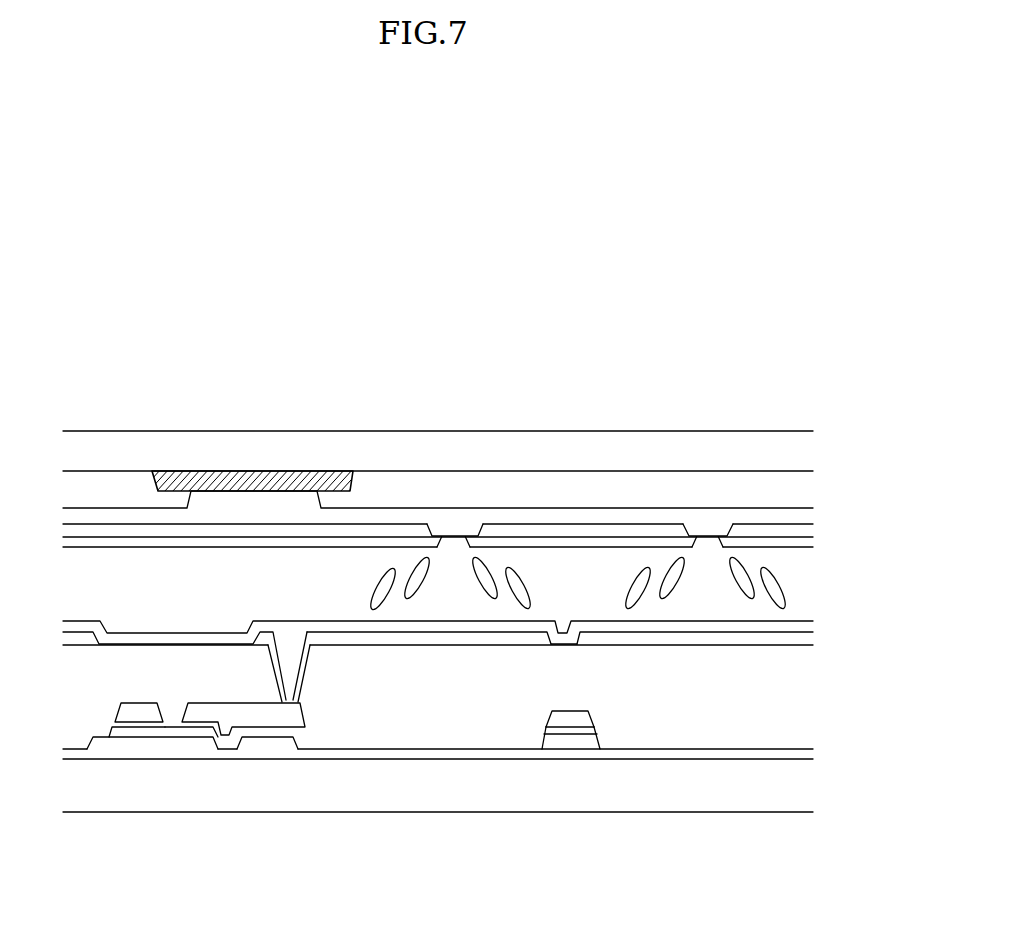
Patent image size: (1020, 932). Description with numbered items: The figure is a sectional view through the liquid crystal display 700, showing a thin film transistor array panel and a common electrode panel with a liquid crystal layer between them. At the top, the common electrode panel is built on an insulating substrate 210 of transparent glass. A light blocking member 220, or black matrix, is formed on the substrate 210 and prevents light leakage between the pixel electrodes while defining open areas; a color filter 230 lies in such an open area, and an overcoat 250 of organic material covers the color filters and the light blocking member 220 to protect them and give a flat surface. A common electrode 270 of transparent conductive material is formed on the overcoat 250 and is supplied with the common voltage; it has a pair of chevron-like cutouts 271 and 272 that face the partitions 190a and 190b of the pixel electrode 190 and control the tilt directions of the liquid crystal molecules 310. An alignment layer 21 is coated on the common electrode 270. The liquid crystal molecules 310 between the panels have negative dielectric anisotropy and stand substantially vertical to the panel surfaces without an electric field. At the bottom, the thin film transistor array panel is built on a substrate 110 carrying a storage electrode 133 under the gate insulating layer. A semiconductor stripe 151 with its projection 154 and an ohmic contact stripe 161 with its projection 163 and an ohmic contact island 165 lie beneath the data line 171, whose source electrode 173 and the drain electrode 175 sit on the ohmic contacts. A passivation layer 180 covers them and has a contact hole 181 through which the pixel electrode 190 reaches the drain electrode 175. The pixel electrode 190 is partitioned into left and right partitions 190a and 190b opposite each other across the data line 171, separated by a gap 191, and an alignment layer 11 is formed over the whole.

The liquid crystal display 700 is at (115, 578).
The insulating substrate 210 is at (342, 432).
The light blocking member 220 is at (216, 478).
The color filter 230 is at (572, 480).
The overcoat 250 is at (518, 516).
The common electrode 270 is at (650, 533).
The cutout 271 is at (452, 537).
The cutout 272 is at (706, 538).
The alignment layer 21 is at (805, 542).
The LC molecules 310 is at (775, 585).
The alignment layer 11 is at (805, 630).
The pixel electrode 190 is at (438, 775).
The partition 190a is at (566, 647).
The partition 190b is at (752, 637).
The gap between sub-pixel electrodes 191 is at (533, 639).
The passivation layer 180 is at (410, 742).
The contact hole 181 is at (291, 687).
The storage electrode 133 is at (302, 752).
The substrate 110 is at (128, 805).
The projection 154 is at (176, 740).
The projection 163 is at (147, 724).
The ohmic contact island 165 is at (272, 722).
The source electrode 173 is at (130, 712).
The drain electrode 175 is at (220, 712).
The data line 171 is at (555, 720).
The semiconductor stripe 151 is at (558, 730).
The ohmic contact stripe 161 is at (565, 743).